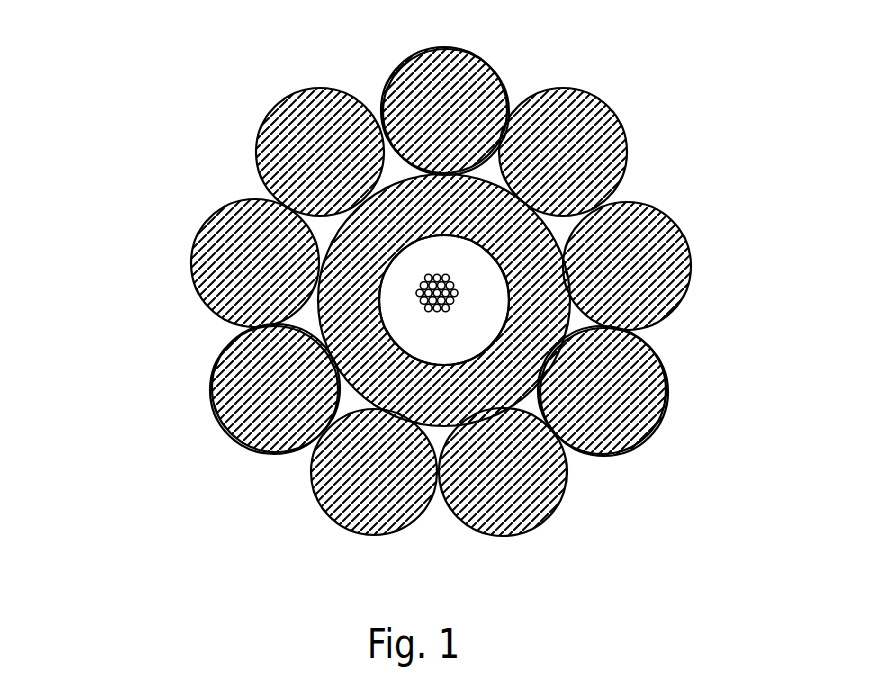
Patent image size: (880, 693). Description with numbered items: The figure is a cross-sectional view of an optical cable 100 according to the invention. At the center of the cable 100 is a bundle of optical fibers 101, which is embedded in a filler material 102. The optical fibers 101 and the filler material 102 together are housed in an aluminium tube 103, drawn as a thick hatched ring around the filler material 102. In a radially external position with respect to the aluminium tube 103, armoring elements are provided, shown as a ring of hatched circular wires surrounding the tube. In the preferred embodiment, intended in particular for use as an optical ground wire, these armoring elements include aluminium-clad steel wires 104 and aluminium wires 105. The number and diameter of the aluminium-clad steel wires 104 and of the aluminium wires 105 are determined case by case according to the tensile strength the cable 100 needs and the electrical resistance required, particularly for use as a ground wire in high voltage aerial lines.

The cable 100 is at (61, 379).
The optical fibers 101 is at (458, 298).
The filler material 102 is at (490, 331).
The aluminium tube 103 is at (345, 290).
The aluminium-clad steel wires 104 is at (466, 84).
The aluminium wires 105 is at (522, 478).